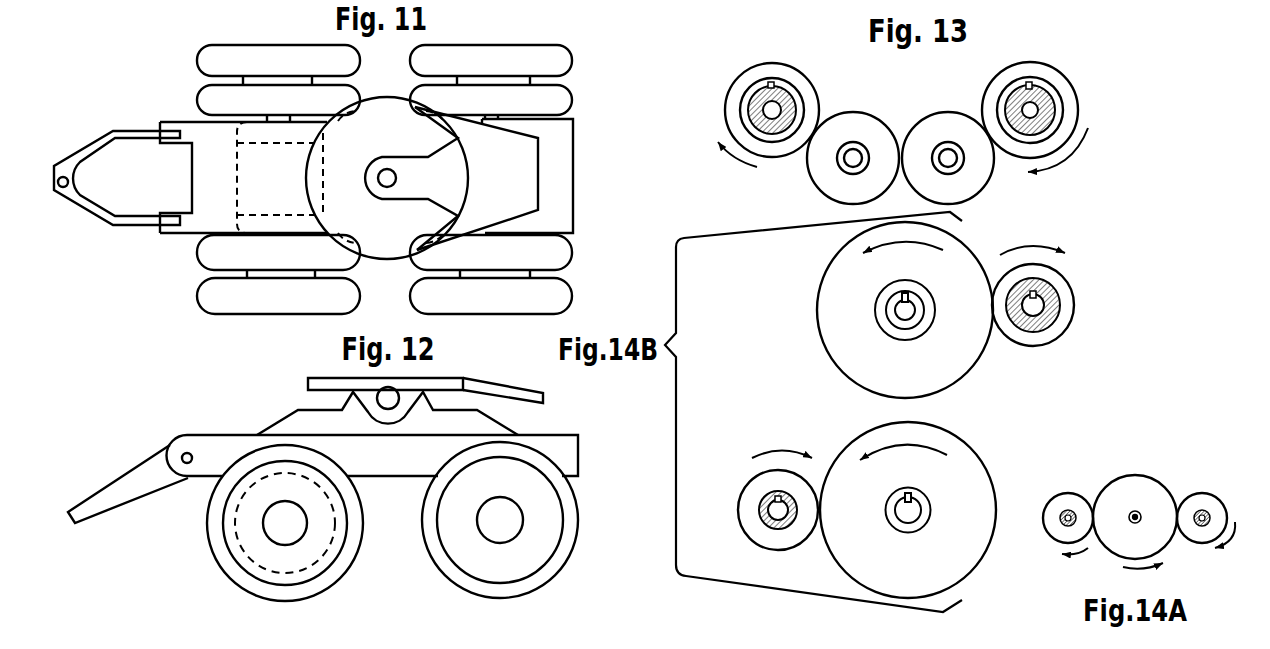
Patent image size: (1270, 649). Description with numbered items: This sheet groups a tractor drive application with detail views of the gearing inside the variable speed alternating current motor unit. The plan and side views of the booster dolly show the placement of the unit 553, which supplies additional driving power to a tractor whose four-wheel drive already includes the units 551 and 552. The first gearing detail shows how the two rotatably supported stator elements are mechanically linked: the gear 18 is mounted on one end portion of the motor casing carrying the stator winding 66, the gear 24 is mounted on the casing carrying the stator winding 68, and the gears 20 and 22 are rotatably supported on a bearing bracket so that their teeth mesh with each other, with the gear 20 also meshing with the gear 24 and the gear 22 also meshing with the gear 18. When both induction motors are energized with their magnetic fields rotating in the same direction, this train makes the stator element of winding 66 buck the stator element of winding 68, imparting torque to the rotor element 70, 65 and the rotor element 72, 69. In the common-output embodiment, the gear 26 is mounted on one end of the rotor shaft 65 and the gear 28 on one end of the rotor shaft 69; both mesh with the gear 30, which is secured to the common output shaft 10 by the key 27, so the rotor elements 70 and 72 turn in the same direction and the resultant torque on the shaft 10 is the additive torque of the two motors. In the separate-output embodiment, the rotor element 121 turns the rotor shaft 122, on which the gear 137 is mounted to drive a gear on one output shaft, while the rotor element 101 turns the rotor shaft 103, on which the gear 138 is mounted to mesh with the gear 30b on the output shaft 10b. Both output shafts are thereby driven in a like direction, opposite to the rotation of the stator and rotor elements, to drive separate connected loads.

In FIG. 11, the unit 551 is at (13, 16).
In FIG. 11, the unit 552 is at (146, 0).
In FIG. 11, the unit 553 is at (260, 183).
In FIG. 12, the unit 553 is at (252, 530).
In FIG. 13, the unit 553 is at (728, 0).
In FIG. 13, the gear 18 is at (1076, 103).
In FIG. 13, the gear 20 is at (830, 192).
In FIG. 13, the gear 22 is at (990, 186).
In FIG. 13, the gear 24 is at (808, 87).
In FIG. 13, the stator winding 66 is at (1046, 100).
In FIG. 13, the stator winding 68 is at (755, 97).
In FIG. 14B, the common output shaft 10 is at (908, 513).
In FIG. 14A, the common output shaft 10 is at (1134, 519).
In FIG. 14B, the output shaft 10b is at (895, 308).
In FIG. 14B, the gear 30 is at (996, 500).
In FIG. 14A, the gear 30 is at (1126, 490).
In FIG. 14B, the gear 30b is at (974, 362).
In FIG. 14B, the rotor element 101 is at (1041, 328).
In FIG. 14B, the rotor shaft 103 is at (1034, 306).
In FIG. 14B, the gear 138 is at (1070, 283).
In FIG. 14B, the gear 137 is at (745, 503).
In FIG. 14B, the rotor element 121 is at (766, 528).
In FIG. 14B, the rotor shaft 122 is at (783, 518).
In FIG. 14A, the gear 26 is at (1187, 493).
In FIG. 14A, the key 27 is at (1137, 512).
In FIG. 14A, the gear 28 is at (1078, 472).
In FIG. 14A, the rotor shaft 65 is at (1200, 525).
In FIG. 14A, the rotor shaft 69 is at (1068, 519).
In FIG. 14A, the rotor element 70 is at (1198, 524).
In FIG. 14A, the rotor element 72 is at (1062, 521).